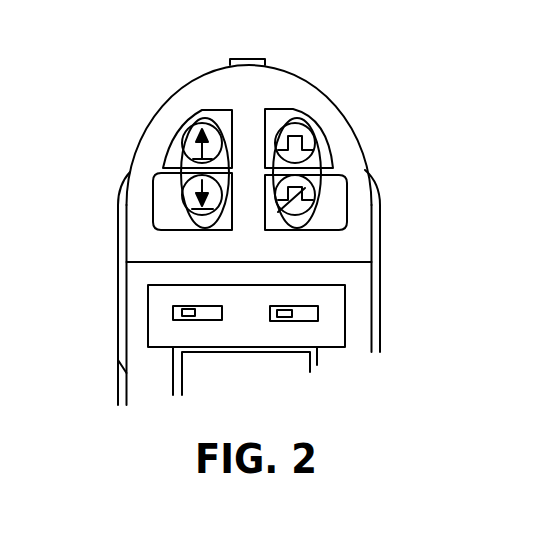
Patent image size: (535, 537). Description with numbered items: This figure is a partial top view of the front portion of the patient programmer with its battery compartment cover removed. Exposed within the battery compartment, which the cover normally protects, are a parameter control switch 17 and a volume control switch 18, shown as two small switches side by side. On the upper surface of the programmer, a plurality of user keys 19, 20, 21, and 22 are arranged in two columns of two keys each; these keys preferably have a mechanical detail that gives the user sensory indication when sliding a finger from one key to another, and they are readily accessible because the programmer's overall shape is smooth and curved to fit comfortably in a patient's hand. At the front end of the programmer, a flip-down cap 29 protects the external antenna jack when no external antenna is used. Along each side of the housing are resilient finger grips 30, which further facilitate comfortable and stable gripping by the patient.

The parameter control switch 17 is at (173, 313).
The volume control switch 18 is at (318, 313).
The user key 19 is at (205, 115).
The user key 20 is at (166, 220).
The user key 21 is at (303, 138).
The user key 22 is at (332, 193).
The flip-down cap 29 is at (250, 58).
The resilient finger grips 30 is at (118, 284).